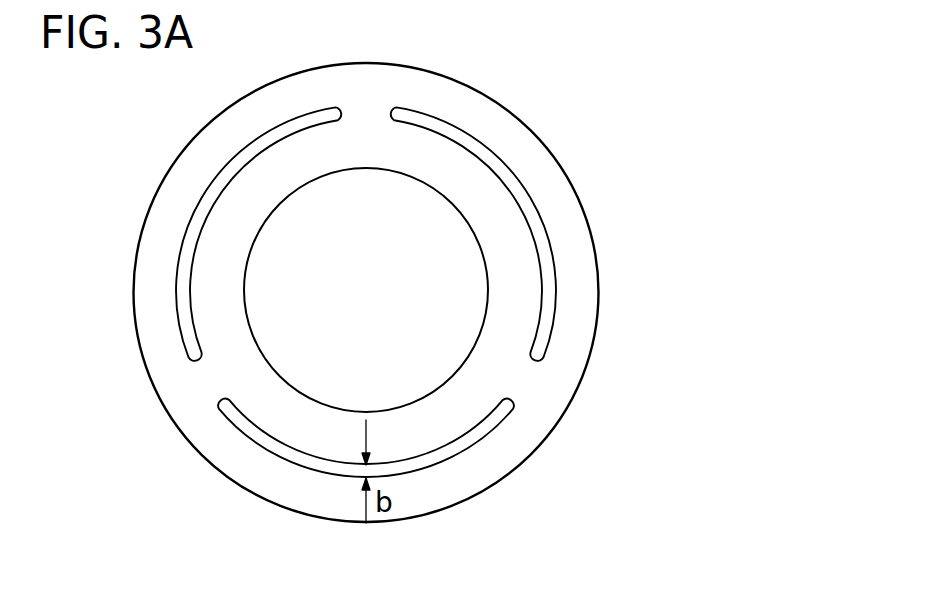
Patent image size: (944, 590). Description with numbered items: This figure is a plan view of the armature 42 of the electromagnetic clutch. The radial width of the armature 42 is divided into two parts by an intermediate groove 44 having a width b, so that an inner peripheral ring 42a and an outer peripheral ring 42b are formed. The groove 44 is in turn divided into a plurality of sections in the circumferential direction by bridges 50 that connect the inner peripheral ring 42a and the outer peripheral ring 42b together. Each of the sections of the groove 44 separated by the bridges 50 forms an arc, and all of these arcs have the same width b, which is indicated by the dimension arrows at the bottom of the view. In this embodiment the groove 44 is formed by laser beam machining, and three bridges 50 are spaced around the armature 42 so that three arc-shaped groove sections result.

The armature 42 is at (377, 284).
The inner peripheral ring 42a is at (488, 245).
The outer peripheral ring 42b is at (582, 285).
The groove 44 is at (188, 242).
The bridges 50 is at (371, 113).